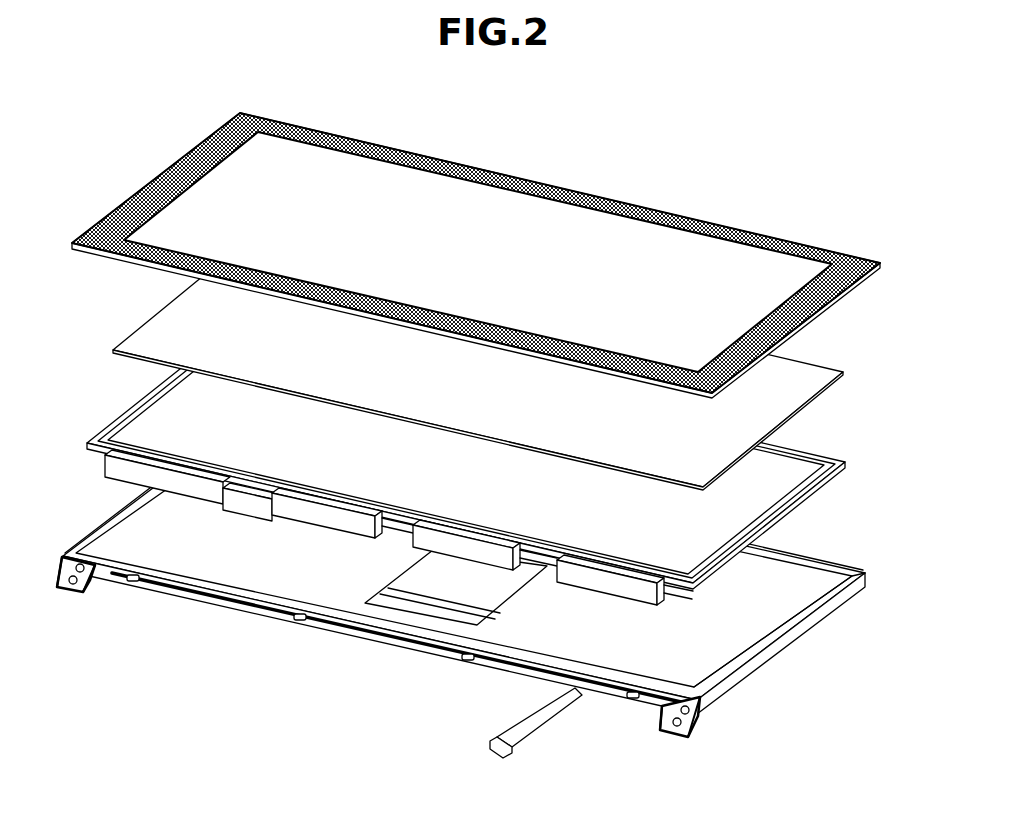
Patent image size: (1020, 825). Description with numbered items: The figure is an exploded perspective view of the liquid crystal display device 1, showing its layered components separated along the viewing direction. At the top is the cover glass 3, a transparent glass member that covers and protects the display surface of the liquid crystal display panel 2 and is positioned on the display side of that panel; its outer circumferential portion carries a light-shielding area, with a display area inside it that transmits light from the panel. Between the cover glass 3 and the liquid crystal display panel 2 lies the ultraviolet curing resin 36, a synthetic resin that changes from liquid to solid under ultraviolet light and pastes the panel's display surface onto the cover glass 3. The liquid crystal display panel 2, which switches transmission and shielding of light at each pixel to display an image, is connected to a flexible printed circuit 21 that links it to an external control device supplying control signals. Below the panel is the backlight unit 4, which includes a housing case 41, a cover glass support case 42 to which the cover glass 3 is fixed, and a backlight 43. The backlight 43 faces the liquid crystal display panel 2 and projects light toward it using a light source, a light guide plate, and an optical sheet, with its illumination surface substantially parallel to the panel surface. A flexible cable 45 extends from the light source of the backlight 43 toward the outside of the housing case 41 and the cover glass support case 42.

The liquid crystal display device 1 is at (472, 432).
The liquid crystal display panel 2 is at (848, 446).
The cover glass 3 is at (853, 230).
The backlight unit 4 is at (472, 581).
The flexible printed circuit 21 is at (450, 586).
The ultraviolet curing resin 36 is at (820, 377).
The housing case 41 is at (786, 647).
The cover glass support case 42 is at (814, 609).
The backlight 43 is at (712, 665).
The flexible cable 45 is at (540, 722).